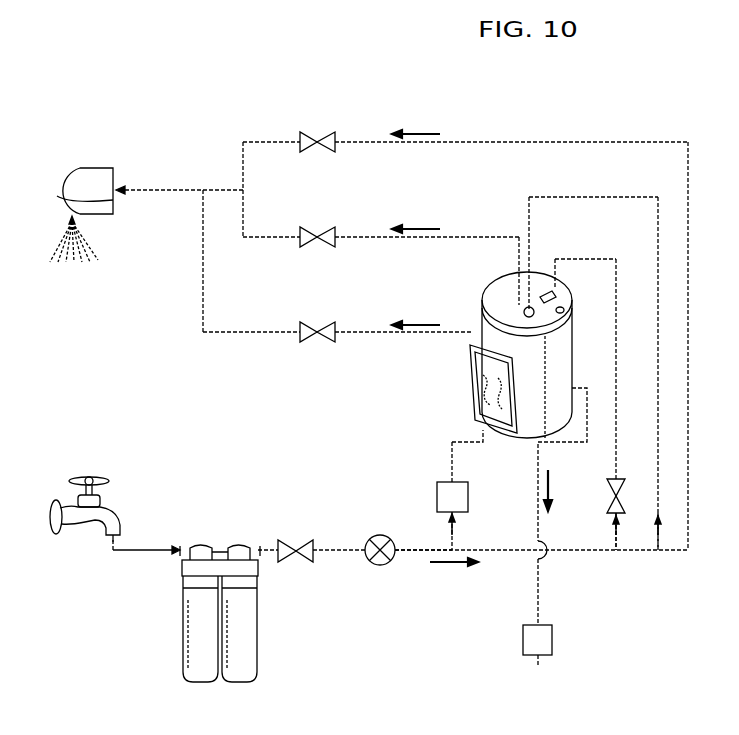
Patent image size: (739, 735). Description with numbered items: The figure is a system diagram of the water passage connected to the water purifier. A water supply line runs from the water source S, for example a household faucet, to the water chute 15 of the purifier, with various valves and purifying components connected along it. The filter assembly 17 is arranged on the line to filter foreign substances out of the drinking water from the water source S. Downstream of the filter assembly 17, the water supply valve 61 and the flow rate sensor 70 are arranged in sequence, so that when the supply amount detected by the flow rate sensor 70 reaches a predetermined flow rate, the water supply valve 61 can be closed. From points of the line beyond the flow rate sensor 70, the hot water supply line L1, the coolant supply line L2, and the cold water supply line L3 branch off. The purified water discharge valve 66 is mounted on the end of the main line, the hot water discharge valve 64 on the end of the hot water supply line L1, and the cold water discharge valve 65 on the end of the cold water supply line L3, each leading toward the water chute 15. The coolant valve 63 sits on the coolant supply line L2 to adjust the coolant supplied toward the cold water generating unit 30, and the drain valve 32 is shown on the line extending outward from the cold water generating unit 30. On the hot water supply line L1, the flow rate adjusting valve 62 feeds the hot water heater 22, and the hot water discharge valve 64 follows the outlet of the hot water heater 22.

The water chute 15 is at (93, 165).
The filter assembly 17 is at (202, 541).
The hot water heater 22 is at (470, 369).
The cold water generating unit 30 is at (572, 352).
The drain valve 32 is at (552, 640).
The water supply valve 61 is at (294, 541).
The flow rate adjusting valve 62 is at (437, 497).
The coolant valve 63 is at (624, 490).
The hot water discharge valve 64 is at (320, 322).
The cold water discharge valve 65 is at (320, 226).
The purified water discharge valve 66 is at (320, 131).
The flow rate sensor 70 is at (380, 535).
The water source S is at (89, 527).
The hot water supply line L1 is at (452, 540).
The coolant supply line L2 is at (613, 553).
The cold water supply line L3 is at (654, 553).